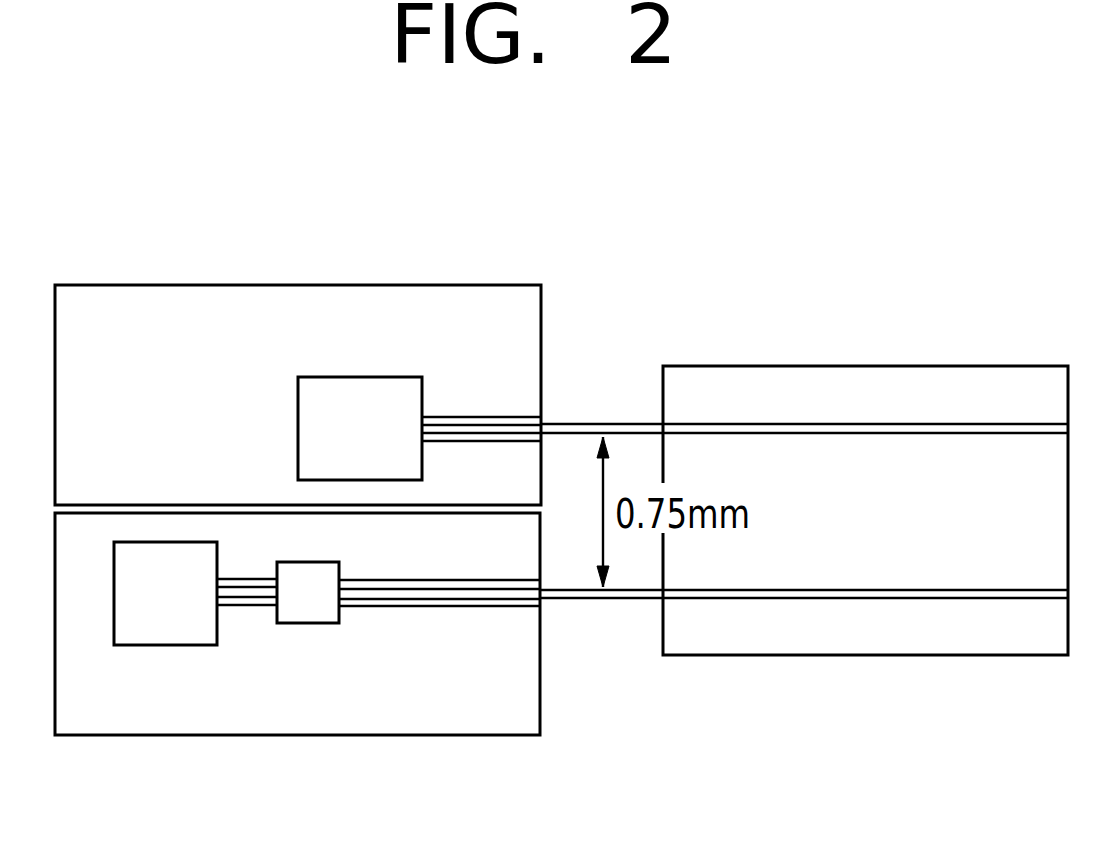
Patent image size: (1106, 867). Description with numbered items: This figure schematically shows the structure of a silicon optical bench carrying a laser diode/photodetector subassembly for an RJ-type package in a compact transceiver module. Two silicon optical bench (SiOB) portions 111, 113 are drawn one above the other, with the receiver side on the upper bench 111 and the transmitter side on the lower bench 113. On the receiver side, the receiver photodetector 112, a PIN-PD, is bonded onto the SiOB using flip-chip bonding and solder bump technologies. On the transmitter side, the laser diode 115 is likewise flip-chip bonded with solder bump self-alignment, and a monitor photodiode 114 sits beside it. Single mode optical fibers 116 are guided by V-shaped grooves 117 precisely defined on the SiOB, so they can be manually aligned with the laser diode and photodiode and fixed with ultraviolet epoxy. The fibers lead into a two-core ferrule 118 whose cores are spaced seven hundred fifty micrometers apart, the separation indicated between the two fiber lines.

The first silicon optical bench (SiOB) 111 is at (123, 298).
The receiver photodetector 112 is at (400, 385).
The second silicon optical bench (SiOB) 113 is at (378, 722).
The monitor photodiode (MPD) 114 is at (133, 632).
The laser diode 115 is at (296, 615).
The optical fiber 116 is at (498, 432).
The V-shaped groove 117 is at (520, 416).
The 2-core ferrule 118 is at (885, 383).